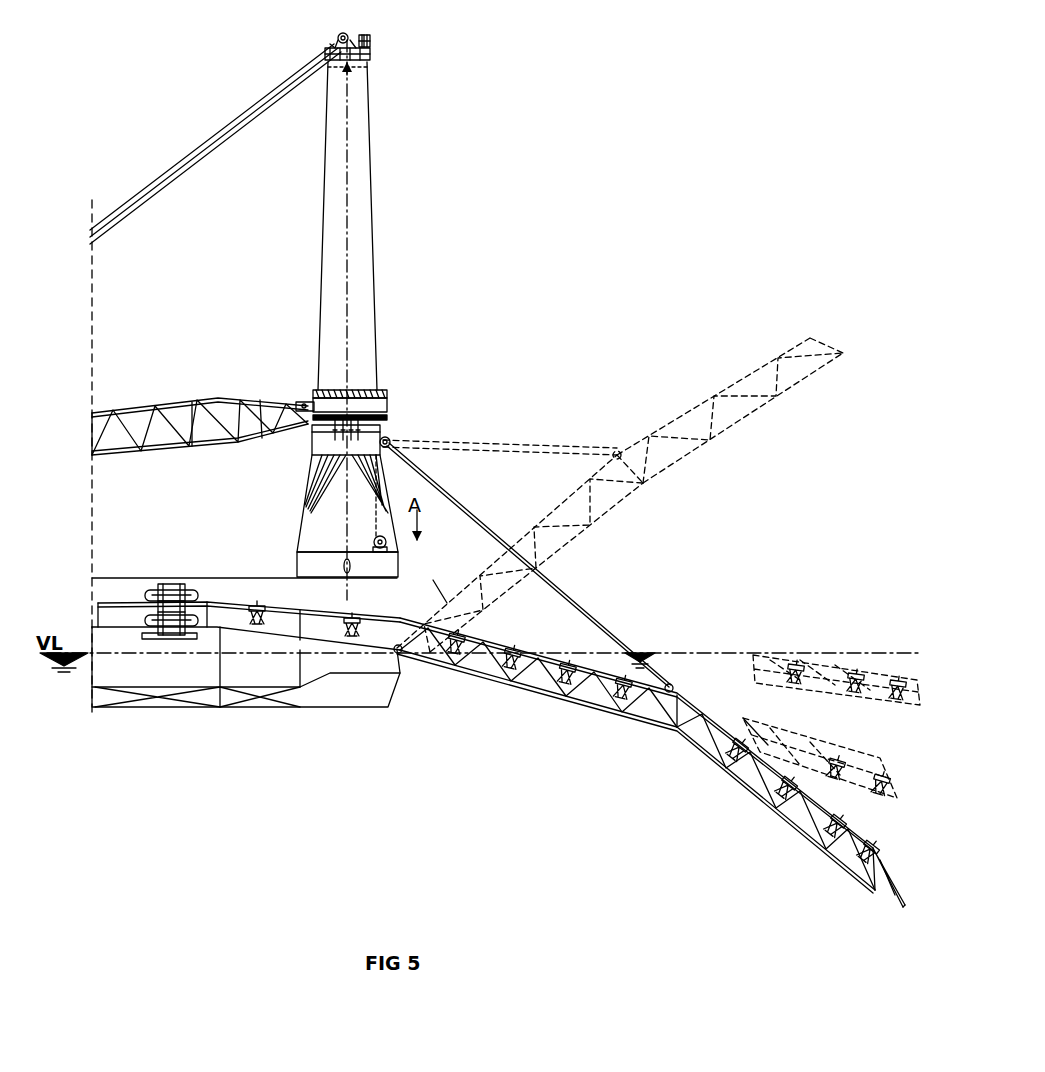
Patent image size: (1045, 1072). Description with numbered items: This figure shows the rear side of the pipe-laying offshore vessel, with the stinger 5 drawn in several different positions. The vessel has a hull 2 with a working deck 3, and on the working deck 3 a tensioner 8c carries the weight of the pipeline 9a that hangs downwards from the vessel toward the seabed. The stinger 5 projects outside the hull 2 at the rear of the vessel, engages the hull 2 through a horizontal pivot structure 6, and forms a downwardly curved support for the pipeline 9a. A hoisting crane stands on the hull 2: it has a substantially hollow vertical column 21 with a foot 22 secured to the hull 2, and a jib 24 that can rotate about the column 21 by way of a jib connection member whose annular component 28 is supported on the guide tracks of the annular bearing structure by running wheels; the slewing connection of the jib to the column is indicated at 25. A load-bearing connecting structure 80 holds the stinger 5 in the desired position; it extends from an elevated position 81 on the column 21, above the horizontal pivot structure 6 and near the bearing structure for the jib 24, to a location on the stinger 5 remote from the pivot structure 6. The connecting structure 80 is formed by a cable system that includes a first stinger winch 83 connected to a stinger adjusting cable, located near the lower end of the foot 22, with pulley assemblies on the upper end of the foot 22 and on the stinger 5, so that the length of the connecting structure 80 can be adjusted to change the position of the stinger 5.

The hull 2 is at (112, 710).
The working deck 3 is at (130, 601).
The stinger 5 is at (703, 406).
The horizontal pivot structure 6 is at (402, 656).
The tensioner 8c is at (173, 577).
The pipeline 9a is at (533, 648).
The substantially hollow vertical column 21 is at (314, 251).
The foot 22 is at (298, 524).
The jib 24 is at (209, 399).
The slewing connection 25 is at (394, 418).
The annular component 28 is at (380, 408).
The load-bearing connecting structure 80 is at (570, 448).
The elevated position 81 is at (391, 438).
The first stinger winch 83 is at (400, 529).